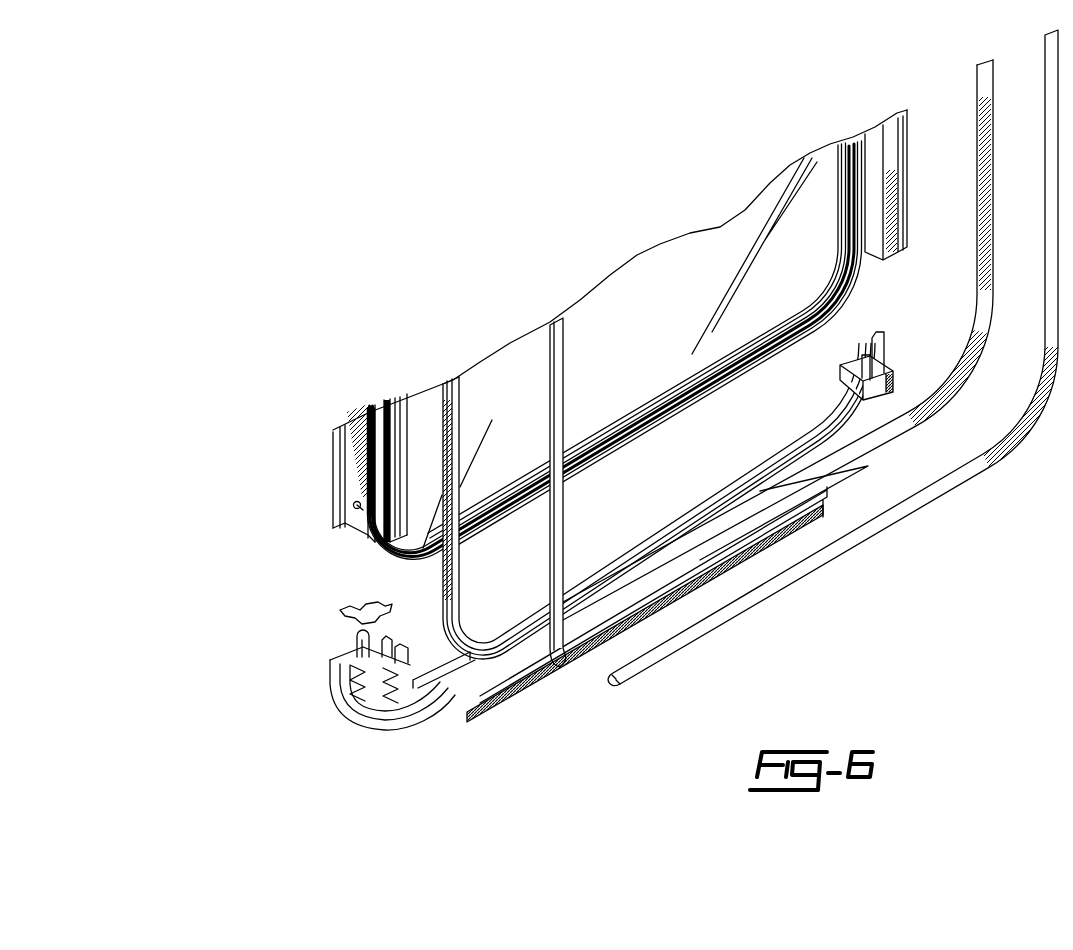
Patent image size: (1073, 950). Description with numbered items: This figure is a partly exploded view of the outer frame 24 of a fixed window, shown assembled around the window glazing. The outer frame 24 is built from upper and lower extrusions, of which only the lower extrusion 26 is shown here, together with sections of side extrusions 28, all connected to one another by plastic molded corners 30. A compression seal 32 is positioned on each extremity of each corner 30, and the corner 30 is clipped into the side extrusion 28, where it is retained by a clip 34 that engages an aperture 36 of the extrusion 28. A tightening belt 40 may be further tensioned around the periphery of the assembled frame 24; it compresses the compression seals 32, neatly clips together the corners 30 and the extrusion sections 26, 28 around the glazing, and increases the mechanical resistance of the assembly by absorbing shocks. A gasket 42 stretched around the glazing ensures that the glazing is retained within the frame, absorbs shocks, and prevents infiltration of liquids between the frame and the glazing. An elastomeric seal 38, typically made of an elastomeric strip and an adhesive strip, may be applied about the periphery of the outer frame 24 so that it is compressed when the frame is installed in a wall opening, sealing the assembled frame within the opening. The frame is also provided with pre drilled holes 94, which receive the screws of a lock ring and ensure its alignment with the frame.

The outer frame 24 is at (172, 428).
The lower extrusion 26 is at (513, 695).
The side extrusion 28 is at (337, 486).
The plastic molded corner 30 is at (374, 722).
The compression seal 32 is at (340, 608).
The clip 34 is at (345, 646).
The aperture 36 is at (354, 505).
The elastomeric seal 38 is at (455, 403).
The tightening belt 40 is at (557, 333).
The gasket 42 is at (683, 407).
The pre drilled holes 94 is at (470, 716).